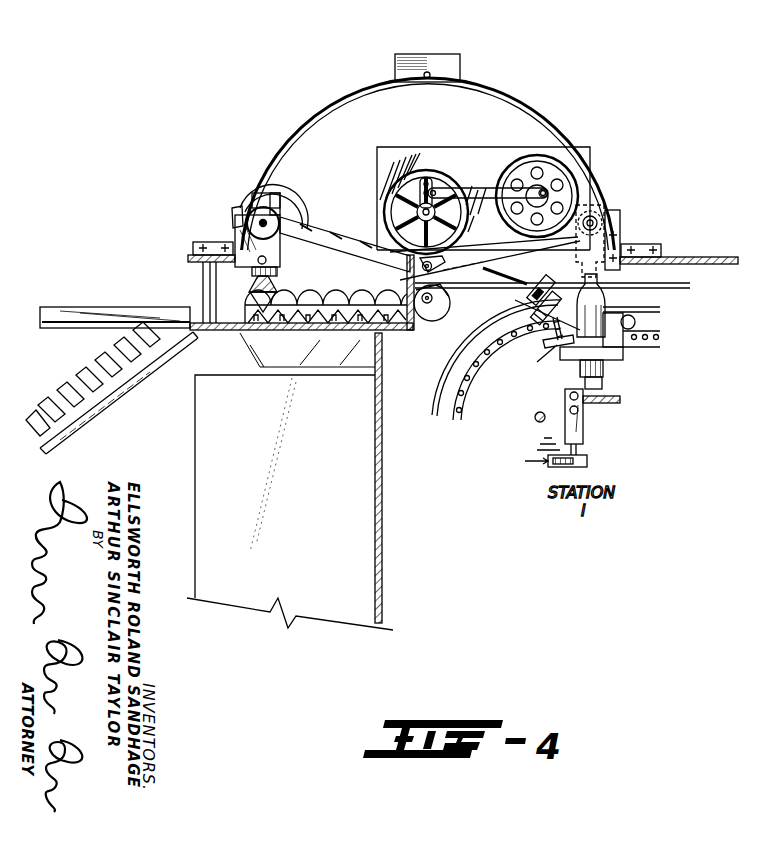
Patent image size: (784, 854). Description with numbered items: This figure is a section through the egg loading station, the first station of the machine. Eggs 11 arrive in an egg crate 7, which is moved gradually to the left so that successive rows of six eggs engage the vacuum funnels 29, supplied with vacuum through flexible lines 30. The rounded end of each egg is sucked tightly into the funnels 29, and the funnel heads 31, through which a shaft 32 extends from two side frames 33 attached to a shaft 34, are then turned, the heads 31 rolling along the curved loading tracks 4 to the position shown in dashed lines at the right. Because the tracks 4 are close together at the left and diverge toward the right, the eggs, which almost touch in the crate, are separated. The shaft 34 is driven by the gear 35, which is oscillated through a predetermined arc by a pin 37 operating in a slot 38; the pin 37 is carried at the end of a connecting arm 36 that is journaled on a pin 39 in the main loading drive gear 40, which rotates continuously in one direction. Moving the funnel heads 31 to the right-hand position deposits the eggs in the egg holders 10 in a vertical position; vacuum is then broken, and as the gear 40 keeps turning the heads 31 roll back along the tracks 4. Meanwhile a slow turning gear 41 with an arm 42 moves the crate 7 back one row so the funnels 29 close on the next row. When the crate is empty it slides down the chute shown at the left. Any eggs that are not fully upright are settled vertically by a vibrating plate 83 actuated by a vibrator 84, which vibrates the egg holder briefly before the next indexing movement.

The curved tracks 4 is at (482, 90).
The egg crate 7 is at (333, 330).
The egg holders 10 is at (603, 317).
The eggs 11 is at (377, 290).
The vacuum funnels 29 is at (272, 287).
The flexible lines 30 is at (280, 190).
The funnel heads 31 is at (280, 260).
The shaft 32 is at (270, 220).
The side frames 33 is at (334, 236).
The shaft 34 is at (432, 268).
The gear 35 is at (392, 172).
The connecting arm 36 is at (476, 190).
The pin 37 is at (426, 178).
The slot 38 is at (437, 190).
The pin 39 is at (548, 190).
The main loading drive gear 40 is at (512, 160).
The slow turning gear 41 is at (429, 322).
The arm 42 is at (446, 302).
The vibrating plate 83 is at (620, 401).
The vibrator 84 is at (588, 459).